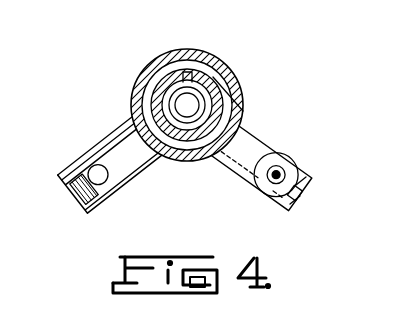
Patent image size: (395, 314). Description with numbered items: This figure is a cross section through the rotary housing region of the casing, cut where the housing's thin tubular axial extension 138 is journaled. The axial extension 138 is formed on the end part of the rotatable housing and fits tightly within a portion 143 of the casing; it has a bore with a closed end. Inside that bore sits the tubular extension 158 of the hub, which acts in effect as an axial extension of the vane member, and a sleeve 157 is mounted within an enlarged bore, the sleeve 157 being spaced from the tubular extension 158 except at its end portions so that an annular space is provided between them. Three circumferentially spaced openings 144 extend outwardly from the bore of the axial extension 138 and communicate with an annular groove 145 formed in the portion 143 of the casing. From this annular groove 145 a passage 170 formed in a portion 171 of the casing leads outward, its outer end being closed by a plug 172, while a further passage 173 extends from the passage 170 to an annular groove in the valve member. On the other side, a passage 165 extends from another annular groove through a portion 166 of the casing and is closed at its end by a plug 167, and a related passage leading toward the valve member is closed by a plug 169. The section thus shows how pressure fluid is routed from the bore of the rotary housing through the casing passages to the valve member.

The axial extension 138 is at (149, 162).
The portion of the casing 143 is at (163, 70).
The openings 144 is at (160, 127).
The annular groove 145 is at (157, 92).
The sleeve 157 is at (187, 94).
The tubular extension 158 is at (200, 88).
The passage 165 is at (264, 140).
The portion of the casing 166 is at (303, 181).
The plug 167 is at (298, 195).
The plug 169 is at (278, 172).
The passage 170 is at (121, 156).
The portion of the casing 171 is at (106, 199).
The plug 172 is at (74, 180).
The passage 173 is at (93, 163).